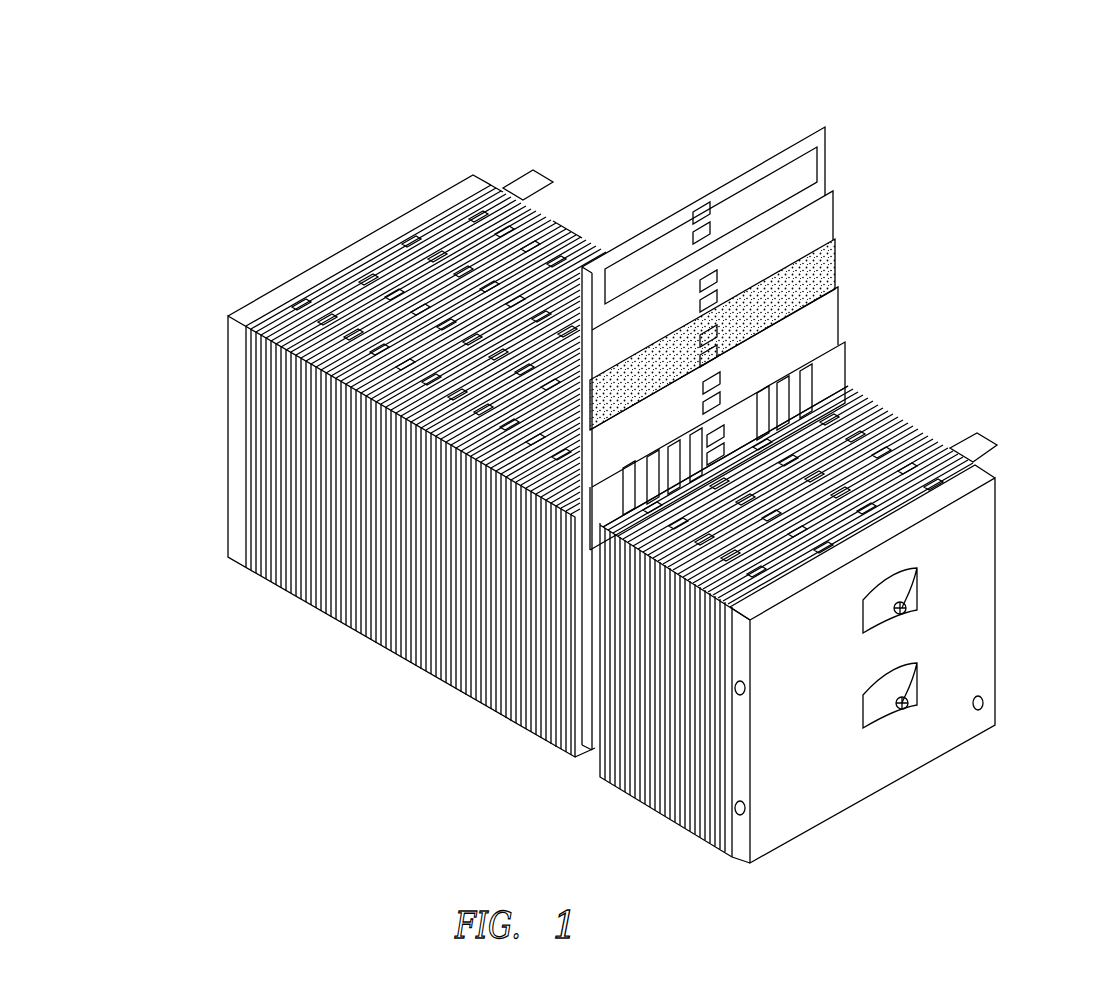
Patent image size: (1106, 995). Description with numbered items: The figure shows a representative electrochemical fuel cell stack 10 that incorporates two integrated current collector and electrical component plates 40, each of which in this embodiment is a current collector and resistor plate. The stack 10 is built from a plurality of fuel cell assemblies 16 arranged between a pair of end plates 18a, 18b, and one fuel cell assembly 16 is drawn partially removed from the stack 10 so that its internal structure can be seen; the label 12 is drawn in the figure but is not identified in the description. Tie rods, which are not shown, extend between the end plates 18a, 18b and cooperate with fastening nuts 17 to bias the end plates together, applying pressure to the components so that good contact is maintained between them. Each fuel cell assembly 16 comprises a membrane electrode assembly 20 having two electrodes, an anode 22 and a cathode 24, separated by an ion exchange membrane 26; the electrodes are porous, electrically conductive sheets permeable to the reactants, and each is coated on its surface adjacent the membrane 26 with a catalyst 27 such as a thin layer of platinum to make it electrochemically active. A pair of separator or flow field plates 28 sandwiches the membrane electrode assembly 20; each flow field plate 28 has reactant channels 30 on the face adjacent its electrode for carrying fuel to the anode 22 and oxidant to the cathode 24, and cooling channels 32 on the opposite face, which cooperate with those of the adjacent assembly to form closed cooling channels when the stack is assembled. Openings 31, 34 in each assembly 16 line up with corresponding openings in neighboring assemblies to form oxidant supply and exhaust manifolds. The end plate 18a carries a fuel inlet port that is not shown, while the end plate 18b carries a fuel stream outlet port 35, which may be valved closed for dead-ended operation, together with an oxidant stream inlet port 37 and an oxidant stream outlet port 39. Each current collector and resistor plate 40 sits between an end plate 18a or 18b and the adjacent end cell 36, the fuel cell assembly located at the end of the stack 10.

The fuel cell stack 10 is at (240, 176).
The cell stack 12 is at (522, 148).
The fuel cell assembly 16 is at (847, 390).
The fastening nut 17 is at (918, 601).
The end plate 18a is at (378, 238).
The end plate 18b is at (978, 554).
The membrane electrode assembly 20 is at (845, 335).
The anode 22 is at (834, 212).
The cathode 24 is at (838, 307).
The ion exchange membrane 26 is at (836, 258).
The catalyst 27 is at (652, 312).
The flow field plate 28 is at (832, 156).
The reactant channel 30 is at (810, 163).
The opening 31 is at (703, 202).
The cooling channel 32 is at (710, 198).
The opening 34 is at (710, 212).
The fuel stream outlet port 35 is at (985, 703).
The end cell 36 is at (546, 178).
The oxidant stream inlet port 37 is at (747, 688).
The oxidant stream outlet port 39 is at (740, 815).
The integrated current collector and electrical component plate 40 is at (493, 183).